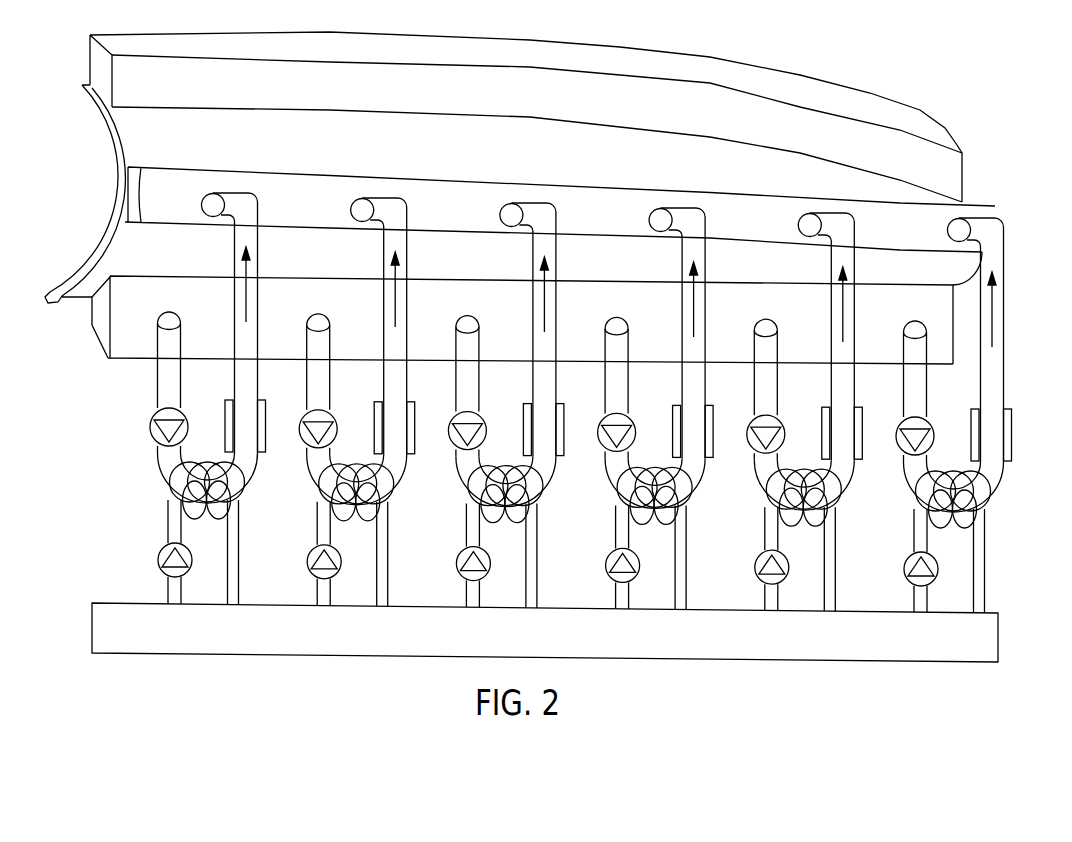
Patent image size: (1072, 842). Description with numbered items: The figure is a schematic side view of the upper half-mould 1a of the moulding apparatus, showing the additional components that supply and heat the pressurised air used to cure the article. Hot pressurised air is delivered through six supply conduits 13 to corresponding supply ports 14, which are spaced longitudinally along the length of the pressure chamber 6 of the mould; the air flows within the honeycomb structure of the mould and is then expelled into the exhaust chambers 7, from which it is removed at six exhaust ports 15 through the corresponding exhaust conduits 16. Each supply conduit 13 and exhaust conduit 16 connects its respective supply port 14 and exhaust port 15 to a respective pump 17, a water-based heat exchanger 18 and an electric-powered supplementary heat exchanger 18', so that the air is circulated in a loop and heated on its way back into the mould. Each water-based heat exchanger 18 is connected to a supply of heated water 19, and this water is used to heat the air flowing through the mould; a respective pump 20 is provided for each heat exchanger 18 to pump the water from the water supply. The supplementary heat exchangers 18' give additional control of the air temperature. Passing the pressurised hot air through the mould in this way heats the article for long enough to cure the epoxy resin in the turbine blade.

The upper half-mould 1a is at (140, 150).
The pressure chamber 6 is at (950, 218).
The exhaust chamber 7 is at (776, 66).
The supply conduit 13 is at (530, 200).
The supply port 14 is at (205, 203).
The exhaust port 15 is at (166, 312).
The exhaust conduit 16 is at (920, 375).
The pump 17 is at (150, 432).
The water-based heat exchanger 18 is at (978, 498).
The electric-powered supplementary heat exchanger 18' is at (643, 418).
The supply of heated water 19 is at (92, 620).
The pump 20 is at (160, 553).